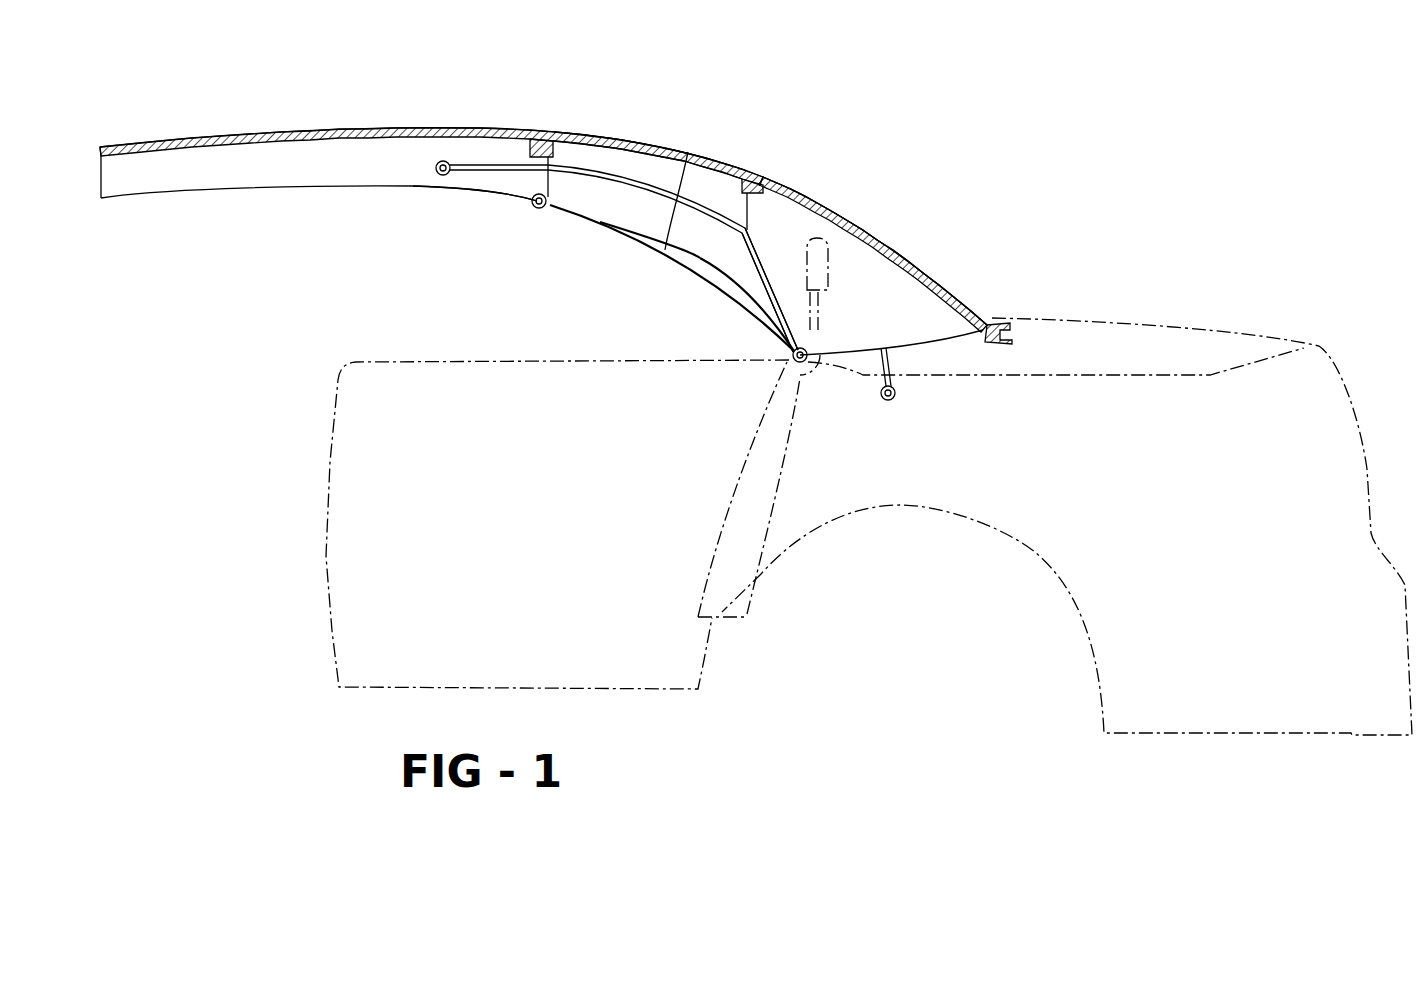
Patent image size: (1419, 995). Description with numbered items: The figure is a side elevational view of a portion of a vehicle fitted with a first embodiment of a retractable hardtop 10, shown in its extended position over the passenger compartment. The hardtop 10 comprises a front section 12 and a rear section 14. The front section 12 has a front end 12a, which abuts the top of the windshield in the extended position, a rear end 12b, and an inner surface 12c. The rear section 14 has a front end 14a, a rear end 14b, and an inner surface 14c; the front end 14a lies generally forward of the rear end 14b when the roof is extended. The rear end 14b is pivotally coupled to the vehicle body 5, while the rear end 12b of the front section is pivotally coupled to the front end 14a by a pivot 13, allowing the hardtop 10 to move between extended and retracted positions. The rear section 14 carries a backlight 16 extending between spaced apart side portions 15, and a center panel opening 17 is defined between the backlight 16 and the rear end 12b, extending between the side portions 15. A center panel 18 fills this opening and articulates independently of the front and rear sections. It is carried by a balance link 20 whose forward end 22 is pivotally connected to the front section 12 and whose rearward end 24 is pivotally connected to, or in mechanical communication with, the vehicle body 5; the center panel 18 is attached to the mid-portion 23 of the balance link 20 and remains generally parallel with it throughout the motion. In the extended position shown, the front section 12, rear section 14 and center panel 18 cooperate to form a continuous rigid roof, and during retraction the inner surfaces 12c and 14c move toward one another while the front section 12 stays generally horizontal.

The vehicle body 5 is at (322, 462).
The retractable hardtop 10 is at (867, 148).
The front section 12 is at (313, 143).
The front end of front section 12a is at (148, 183).
The rear end of front section 12b is at (497, 188).
The inner surface of front section 12c is at (285, 173).
The pivot 13 is at (530, 210).
The rear section 14 is at (887, 297).
The front end of rear section 14a is at (570, 200).
The rear end of rear section 14b is at (907, 330).
The inner surface of rear section 14c is at (767, 310).
The side portions 15 is at (640, 218).
The backlight 16 is at (867, 230).
The center panel opening 17 is at (672, 190).
The center panel 18 is at (625, 140).
The balance link 20 is at (752, 257).
The forward end of balance link 22 is at (455, 160).
The mid-portion of balance link 23 is at (665, 250).
The rearward end of balance link 24 is at (785, 362).